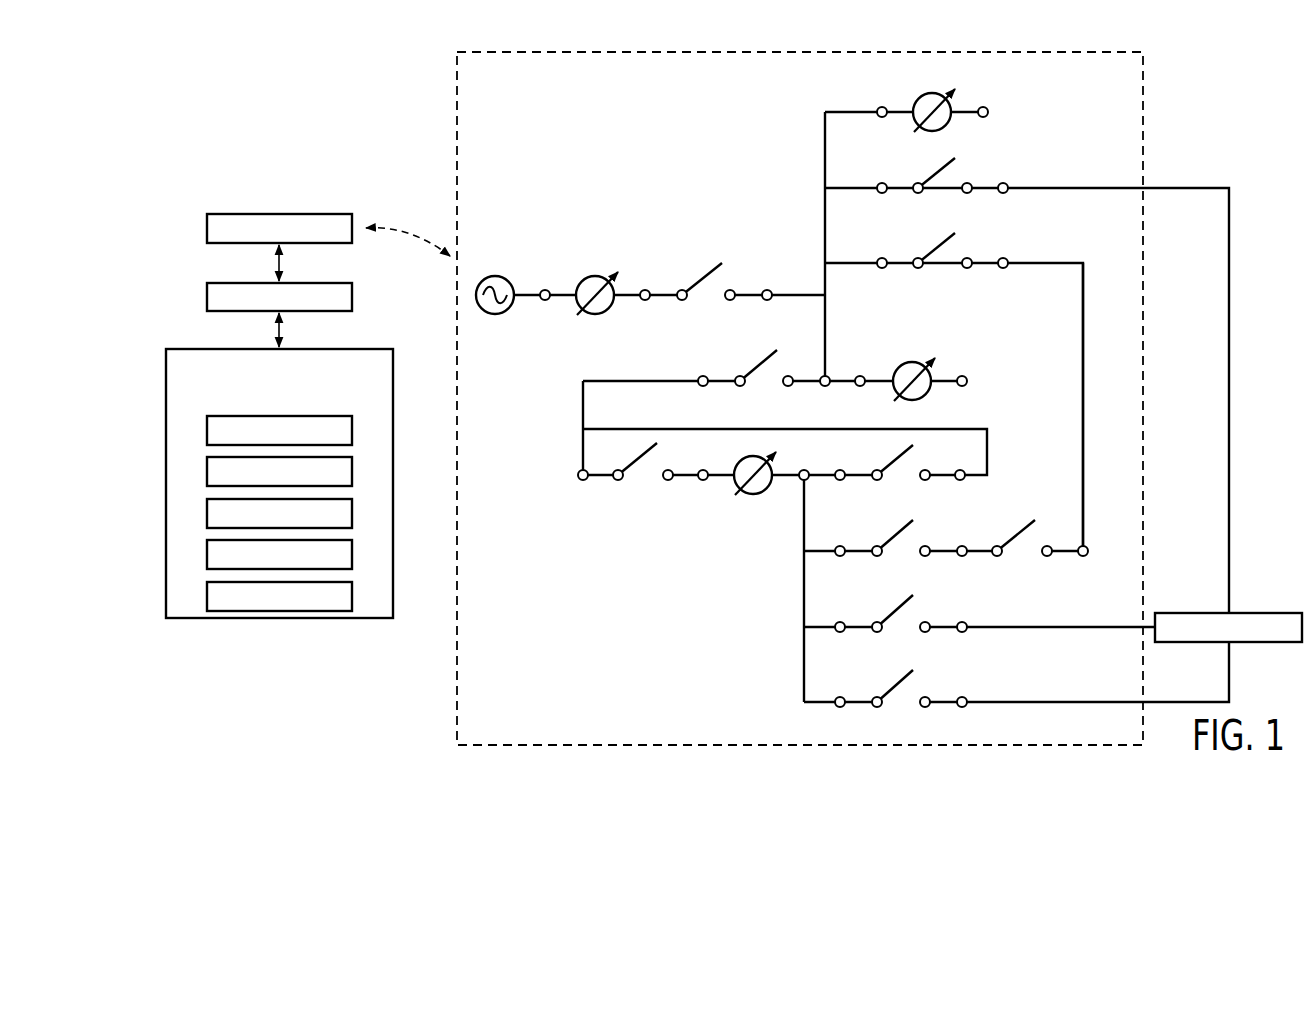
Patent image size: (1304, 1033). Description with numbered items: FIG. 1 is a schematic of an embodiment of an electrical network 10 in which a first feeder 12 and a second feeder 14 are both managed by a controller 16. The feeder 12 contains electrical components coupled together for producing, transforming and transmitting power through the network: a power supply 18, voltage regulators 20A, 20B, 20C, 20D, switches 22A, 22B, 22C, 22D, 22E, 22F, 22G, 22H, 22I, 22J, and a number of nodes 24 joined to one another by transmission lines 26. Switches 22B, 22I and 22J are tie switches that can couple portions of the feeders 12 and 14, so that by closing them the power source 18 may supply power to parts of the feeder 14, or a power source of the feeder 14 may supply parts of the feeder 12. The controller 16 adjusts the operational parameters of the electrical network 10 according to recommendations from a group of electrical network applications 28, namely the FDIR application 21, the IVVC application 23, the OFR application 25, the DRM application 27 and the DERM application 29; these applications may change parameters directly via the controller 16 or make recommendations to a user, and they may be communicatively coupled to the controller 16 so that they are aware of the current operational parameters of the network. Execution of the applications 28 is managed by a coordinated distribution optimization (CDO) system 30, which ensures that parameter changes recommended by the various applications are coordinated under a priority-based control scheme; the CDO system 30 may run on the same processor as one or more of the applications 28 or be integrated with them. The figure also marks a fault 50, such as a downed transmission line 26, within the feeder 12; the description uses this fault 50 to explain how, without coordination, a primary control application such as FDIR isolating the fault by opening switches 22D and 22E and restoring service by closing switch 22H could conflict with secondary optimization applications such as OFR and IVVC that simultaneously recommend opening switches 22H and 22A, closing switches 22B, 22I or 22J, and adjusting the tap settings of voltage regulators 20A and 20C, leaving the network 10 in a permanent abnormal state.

The electrical network 10 is at (1221, 66).
The first feeder 12 is at (456, 100).
The second feeder 14 is at (1265, 613).
The controller 16 is at (207, 226).
The power supply 18 is at (485, 278).
The voltage regulator 20A is at (581, 281).
The voltage regulator 20B is at (919, 98).
The voltage regulator 20C is at (898, 367).
The voltage regulator 20D is at (766, 490).
The switch 22A is at (703, 278).
The tie switch 22B is at (940, 172).
The switch 22C is at (940, 247).
The switch 22D is at (760, 365).
The switch 22E is at (643, 457).
The switch 22F is at (895, 459).
The switch 22G is at (897, 535).
The switch 22H is at (1017, 535).
The tie switch 22I is at (897, 610).
The tie switch 22J is at (897, 686).
The node 24 is at (875, 709).
The transmission line 26 is at (640, 381).
The electrical network applications 28 is at (338, 350).
The FDIR application 21 is at (207, 430).
The IVVC application 23 is at (352, 471).
The OFR application 25 is at (207, 512).
The DRM application 27 is at (352, 553).
The DERM application 29 is at (207, 595).
The coordinated distribution optimization (CDO) system 30 is at (207, 294).
The fault 50 is at (564, 407).